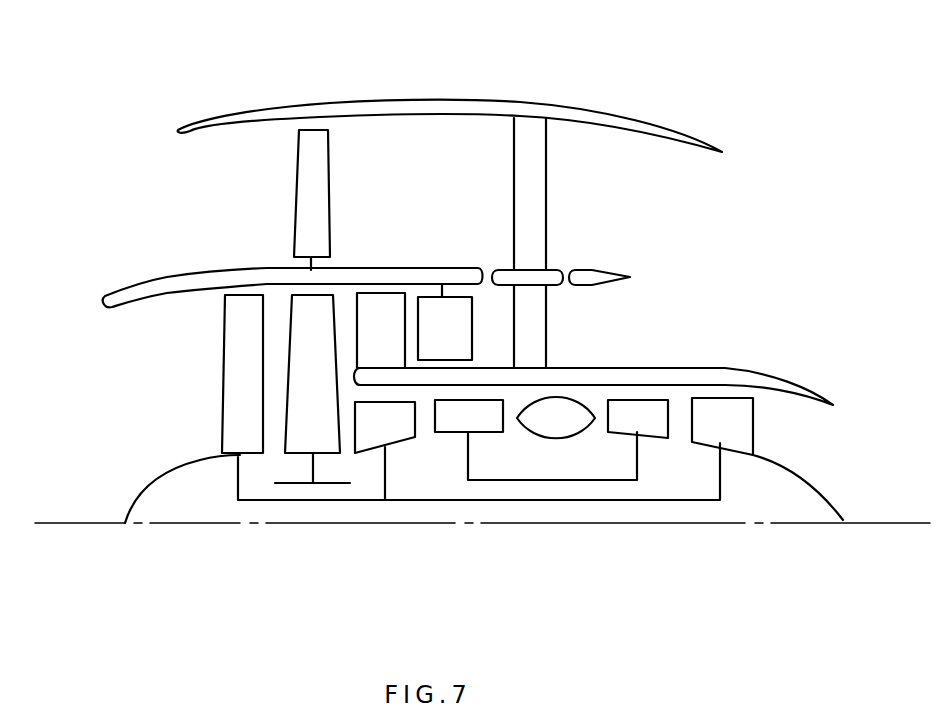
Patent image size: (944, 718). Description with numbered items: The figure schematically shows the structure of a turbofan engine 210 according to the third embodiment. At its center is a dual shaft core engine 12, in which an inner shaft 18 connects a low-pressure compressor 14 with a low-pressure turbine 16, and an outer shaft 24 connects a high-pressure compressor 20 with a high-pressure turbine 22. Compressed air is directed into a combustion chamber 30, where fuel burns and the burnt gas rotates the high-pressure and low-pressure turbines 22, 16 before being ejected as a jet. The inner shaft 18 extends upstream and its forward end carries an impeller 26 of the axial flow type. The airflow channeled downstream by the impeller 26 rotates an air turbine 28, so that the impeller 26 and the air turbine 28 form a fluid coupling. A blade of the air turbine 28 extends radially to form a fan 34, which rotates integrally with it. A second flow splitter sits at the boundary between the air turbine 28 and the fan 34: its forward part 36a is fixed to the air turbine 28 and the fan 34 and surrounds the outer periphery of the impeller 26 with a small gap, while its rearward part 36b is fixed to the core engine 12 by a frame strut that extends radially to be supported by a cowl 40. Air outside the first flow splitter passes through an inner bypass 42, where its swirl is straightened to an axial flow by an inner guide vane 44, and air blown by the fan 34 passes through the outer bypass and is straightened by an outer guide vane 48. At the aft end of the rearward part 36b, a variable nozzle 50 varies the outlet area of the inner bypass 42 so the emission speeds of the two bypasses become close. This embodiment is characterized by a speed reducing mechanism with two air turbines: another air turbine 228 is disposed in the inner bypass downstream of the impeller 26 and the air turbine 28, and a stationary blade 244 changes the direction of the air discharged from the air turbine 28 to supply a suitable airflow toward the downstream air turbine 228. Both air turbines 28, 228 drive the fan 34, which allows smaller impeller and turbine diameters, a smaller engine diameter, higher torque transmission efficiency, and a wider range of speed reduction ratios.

The core engine 12 is at (756, 362).
The low-pressure compressor 14 is at (400, 440).
The low-pressure turbine 16 is at (748, 427).
The inner shaft 18 is at (608, 500).
The high-pressure compressor 20 is at (485, 429).
The high-pressure turbine 22 is at (648, 432).
The outer shaft 24 is at (537, 478).
The impeller 26 is at (225, 346).
The air turbine 28 is at (300, 298).
The combustion chamber 30 is at (573, 432).
The fan 34 is at (303, 160).
The forward part of the second flow splitter 36a is at (147, 274).
The rearward part of the second flow splitter 36b is at (557, 267).
The cowl 40 is at (412, 99).
The inner bypass 42 is at (602, 337).
The inner guide vane 44 is at (459, 166).
The outer guide vane 48 is at (543, 198).
The variable nozzle 50 is at (600, 265).
The turbofan engine 210 is at (737, 221).
The air turbine 228 is at (467, 320).
The stationary blade 244 is at (375, 298).